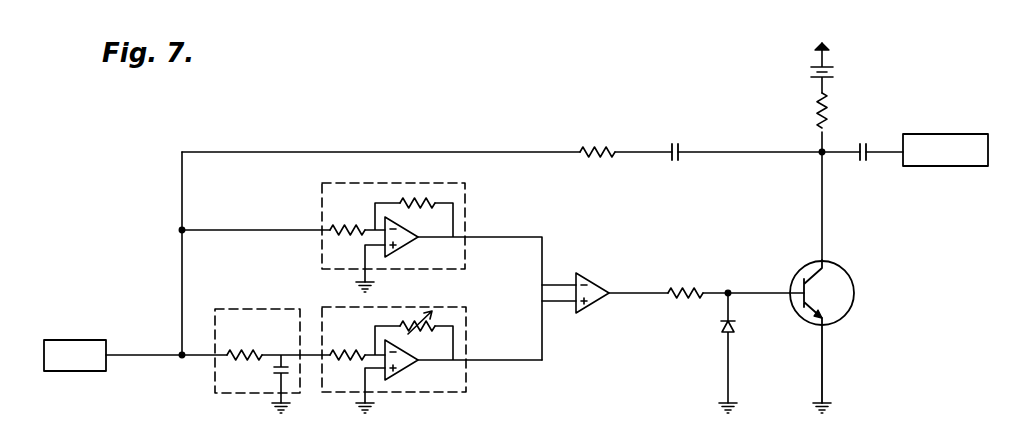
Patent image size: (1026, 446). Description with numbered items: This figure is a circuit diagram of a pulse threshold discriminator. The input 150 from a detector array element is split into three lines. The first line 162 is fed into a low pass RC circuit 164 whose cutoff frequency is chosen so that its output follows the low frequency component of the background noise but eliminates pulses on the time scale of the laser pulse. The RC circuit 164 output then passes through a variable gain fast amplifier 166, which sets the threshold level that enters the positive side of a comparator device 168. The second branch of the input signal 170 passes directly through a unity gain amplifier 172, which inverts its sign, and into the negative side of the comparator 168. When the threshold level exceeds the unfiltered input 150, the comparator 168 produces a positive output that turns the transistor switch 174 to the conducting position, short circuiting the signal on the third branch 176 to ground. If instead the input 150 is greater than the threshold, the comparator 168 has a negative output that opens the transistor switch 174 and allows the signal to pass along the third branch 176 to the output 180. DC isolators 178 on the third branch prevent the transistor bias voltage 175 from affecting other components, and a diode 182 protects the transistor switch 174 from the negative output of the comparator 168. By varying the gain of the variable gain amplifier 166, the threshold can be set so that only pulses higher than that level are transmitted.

The input 150 is at (73, 372).
The first line 162 is at (204, 357).
The low pass RC circuit 164 is at (263, 307).
The variable gain fast amplifier 166 is at (468, 317).
The comparator device 168 is at (604, 283).
The second branch of the input signal 170 is at (202, 229).
The unity gain amplifier 172 is at (467, 208).
The transistor switch 174 is at (848, 272).
The transistor bias voltage 175 is at (830, 79).
The third branch 176 is at (198, 152).
The DC isolators 178 is at (682, 145).
The output 180 is at (945, 134).
The diode 182 is at (735, 325).